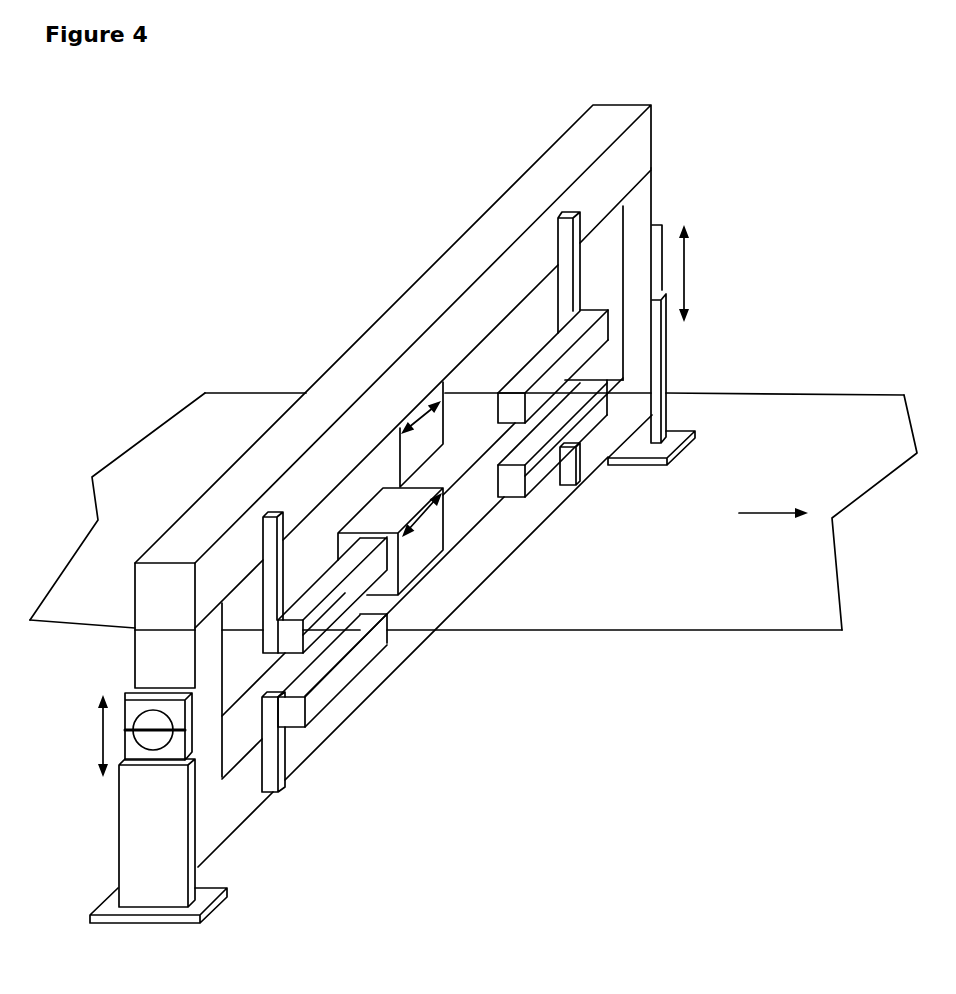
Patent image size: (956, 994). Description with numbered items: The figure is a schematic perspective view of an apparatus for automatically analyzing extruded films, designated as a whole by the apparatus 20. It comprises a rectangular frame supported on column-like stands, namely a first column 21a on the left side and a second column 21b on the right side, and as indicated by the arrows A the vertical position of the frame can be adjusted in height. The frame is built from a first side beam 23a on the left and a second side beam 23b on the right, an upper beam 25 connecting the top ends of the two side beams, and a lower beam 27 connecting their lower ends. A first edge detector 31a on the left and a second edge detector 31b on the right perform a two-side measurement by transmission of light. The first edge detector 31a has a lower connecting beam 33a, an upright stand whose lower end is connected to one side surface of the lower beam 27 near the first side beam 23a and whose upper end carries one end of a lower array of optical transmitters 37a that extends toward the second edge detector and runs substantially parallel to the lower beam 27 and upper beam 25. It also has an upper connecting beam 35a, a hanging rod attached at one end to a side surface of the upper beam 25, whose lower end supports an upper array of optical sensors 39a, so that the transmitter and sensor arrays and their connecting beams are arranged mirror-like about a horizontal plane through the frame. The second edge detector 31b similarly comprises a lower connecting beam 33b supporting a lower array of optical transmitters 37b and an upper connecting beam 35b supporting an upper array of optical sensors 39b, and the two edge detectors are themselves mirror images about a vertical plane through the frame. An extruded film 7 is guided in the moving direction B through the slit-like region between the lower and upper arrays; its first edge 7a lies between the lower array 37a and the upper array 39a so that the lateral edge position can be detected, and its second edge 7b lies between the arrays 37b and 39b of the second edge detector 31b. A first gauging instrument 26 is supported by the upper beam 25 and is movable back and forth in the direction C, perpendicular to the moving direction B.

The apparatus for automatically analyzing extruded films 20 is at (226, 226).
The upper beam 25 is at (543, 148).
The lower beam 27 is at (413, 645).
The first side beam 23a is at (135, 648).
The second side beam 23b is at (651, 170).
The first column 21a is at (119, 848).
The second column 21b is at (666, 358).
The upper connecting beam 35a is at (265, 520).
The upper connecting beam 35b is at (563, 244).
The upper array of optical sensors 39a is at (320, 588).
The upper array of optical sensors 39b is at (545, 350).
The first gauging instrument 26 is at (409, 502).
The first edge detector 31a is at (358, 738).
The second edge detector 31b is at (582, 474).
The lower connecting beam 33a is at (267, 758).
The lower connecting beam 33b is at (600, 473).
The lower array of optical transmitters 37a is at (348, 678).
The lower array of optical transmitters 37b is at (542, 465).
The extruded film 7 is at (473, 508).
The first edge 7a is at (543, 627).
The second edge 7b is at (820, 387).